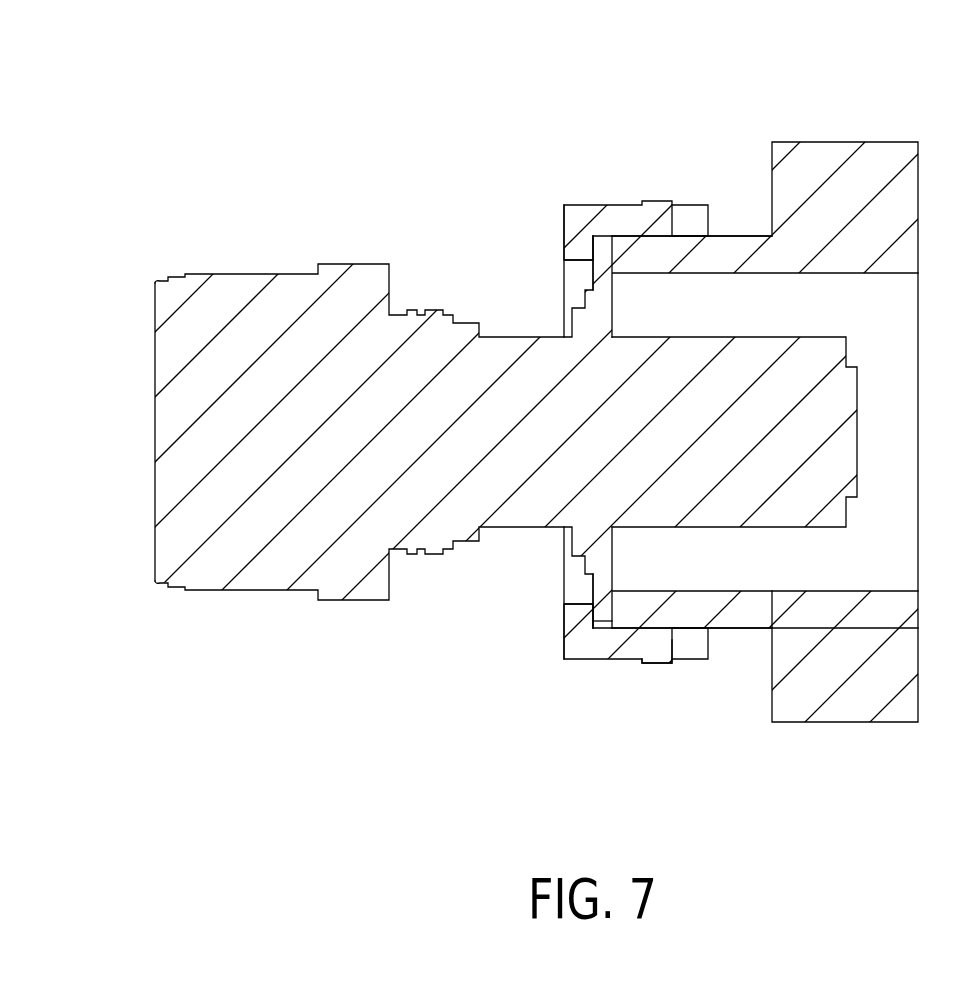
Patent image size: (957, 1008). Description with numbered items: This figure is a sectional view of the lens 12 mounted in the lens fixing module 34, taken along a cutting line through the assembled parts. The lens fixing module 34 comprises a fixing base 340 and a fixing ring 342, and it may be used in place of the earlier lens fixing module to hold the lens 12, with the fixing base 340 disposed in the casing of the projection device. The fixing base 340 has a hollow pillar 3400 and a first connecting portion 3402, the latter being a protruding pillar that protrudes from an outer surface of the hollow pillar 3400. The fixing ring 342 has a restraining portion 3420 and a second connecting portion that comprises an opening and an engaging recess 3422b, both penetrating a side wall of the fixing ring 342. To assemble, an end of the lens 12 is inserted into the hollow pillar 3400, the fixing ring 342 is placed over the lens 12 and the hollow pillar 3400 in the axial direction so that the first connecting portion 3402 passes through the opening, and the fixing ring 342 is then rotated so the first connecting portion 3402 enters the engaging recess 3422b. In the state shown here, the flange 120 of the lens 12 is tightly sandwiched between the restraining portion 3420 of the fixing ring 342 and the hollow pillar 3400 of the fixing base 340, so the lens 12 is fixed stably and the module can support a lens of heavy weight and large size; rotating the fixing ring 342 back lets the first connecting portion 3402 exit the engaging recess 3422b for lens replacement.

The lens 12 is at (235, 274).
The flange 120 is at (602, 621).
The lens fixing module 34 is at (833, 75).
The fixing base 340 is at (805, 142).
The hollow pillar 3400 is at (743, 617).
The first connecting portion 3402 is at (655, 663).
The fixing ring 342 is at (622, 205).
The restraining portion 3420 is at (571, 616).
The engaging recess 3422b is at (642, 646).